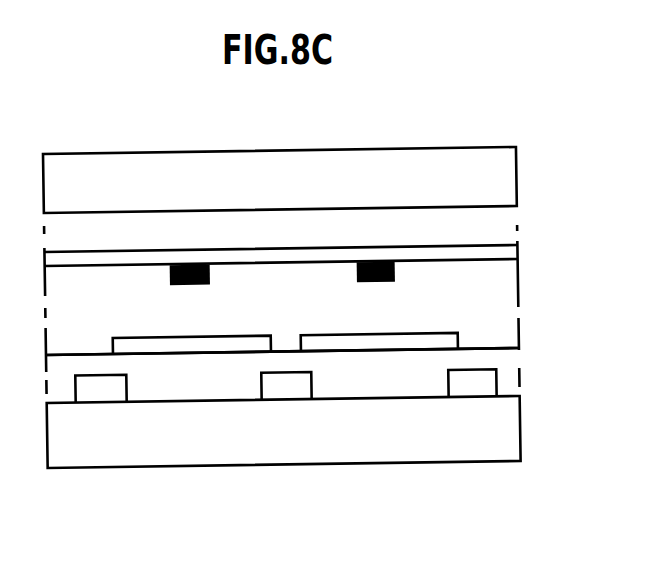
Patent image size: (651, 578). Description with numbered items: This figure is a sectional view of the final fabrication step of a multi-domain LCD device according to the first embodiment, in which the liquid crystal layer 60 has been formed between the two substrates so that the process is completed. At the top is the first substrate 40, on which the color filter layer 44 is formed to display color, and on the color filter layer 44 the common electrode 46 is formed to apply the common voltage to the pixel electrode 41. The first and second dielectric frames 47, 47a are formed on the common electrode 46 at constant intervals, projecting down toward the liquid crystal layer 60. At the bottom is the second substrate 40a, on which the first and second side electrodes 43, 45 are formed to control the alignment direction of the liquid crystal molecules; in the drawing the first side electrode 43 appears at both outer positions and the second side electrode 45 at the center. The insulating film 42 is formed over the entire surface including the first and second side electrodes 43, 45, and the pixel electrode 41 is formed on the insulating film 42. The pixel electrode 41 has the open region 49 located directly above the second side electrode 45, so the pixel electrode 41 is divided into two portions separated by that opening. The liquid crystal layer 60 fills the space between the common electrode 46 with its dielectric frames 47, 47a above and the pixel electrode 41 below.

The first substrate 40 is at (505, 190).
The color filter layer 44 is at (505, 231).
The common electrode 46 is at (505, 263).
The liquid crystal layer 60 is at (505, 305).
The first dielectric frame 47 is at (168, 274).
The second dielectric frame 47a is at (395, 273).
The pixel electrode 41 is at (455, 345).
The open region 49 is at (282, 344).
The insulating film 42 is at (505, 385).
The first side electrode 43 is at (97, 394).
The second side electrode 45 is at (283, 394).
The second substrate 40a is at (505, 440).